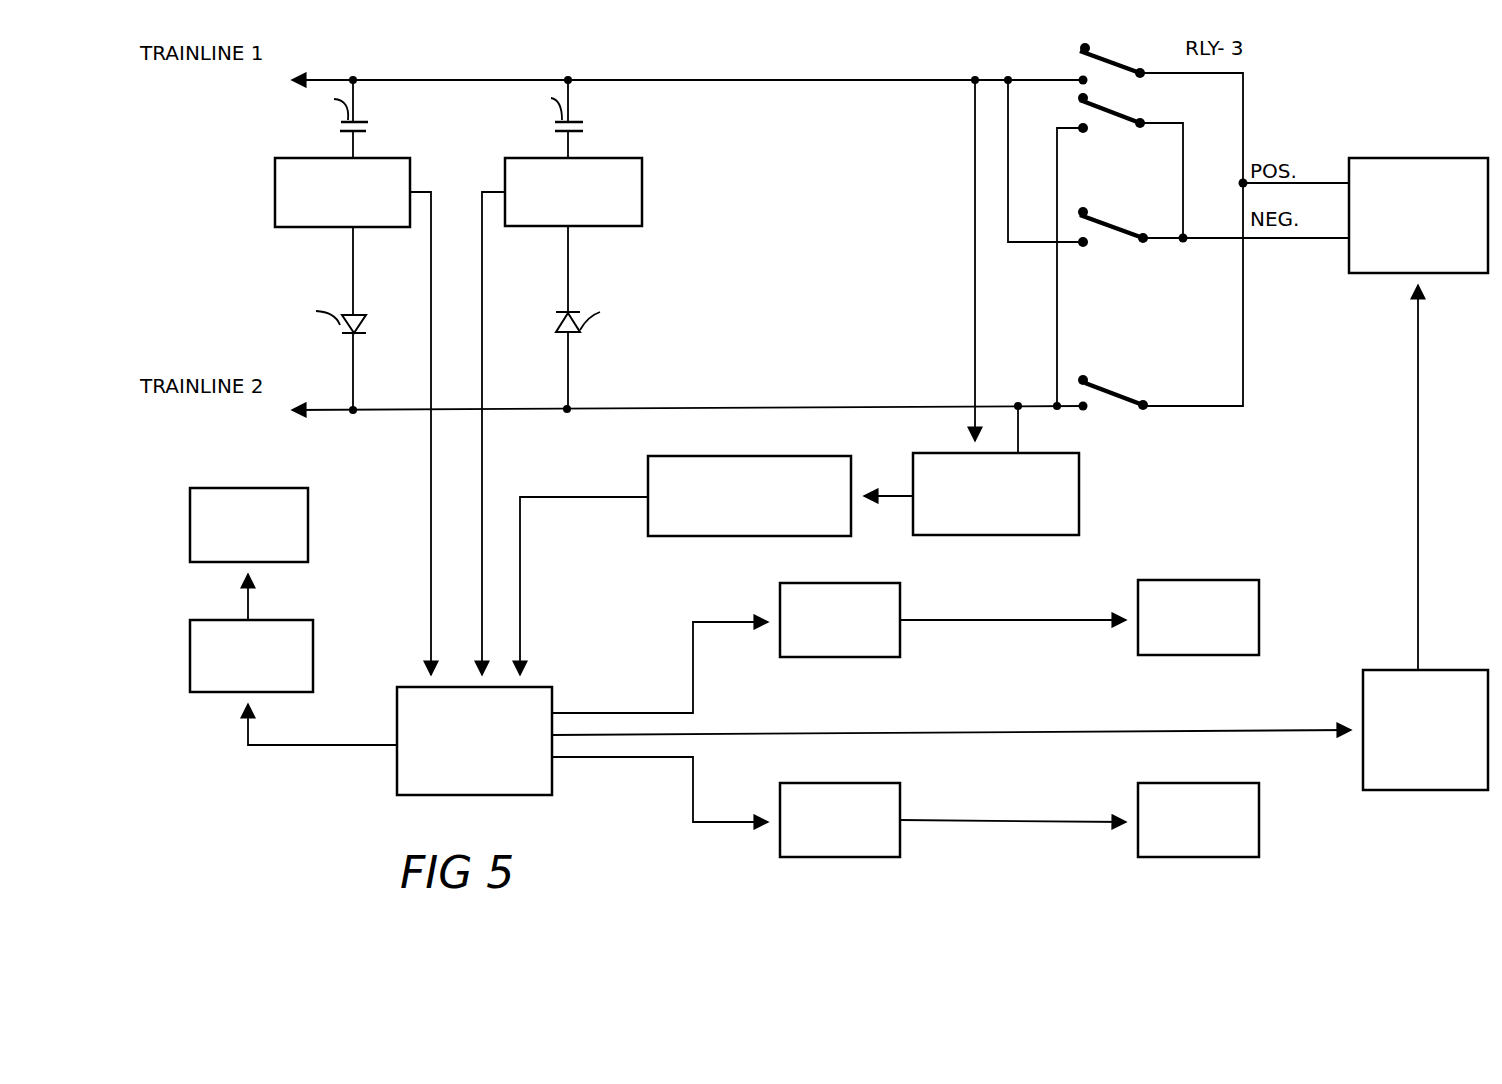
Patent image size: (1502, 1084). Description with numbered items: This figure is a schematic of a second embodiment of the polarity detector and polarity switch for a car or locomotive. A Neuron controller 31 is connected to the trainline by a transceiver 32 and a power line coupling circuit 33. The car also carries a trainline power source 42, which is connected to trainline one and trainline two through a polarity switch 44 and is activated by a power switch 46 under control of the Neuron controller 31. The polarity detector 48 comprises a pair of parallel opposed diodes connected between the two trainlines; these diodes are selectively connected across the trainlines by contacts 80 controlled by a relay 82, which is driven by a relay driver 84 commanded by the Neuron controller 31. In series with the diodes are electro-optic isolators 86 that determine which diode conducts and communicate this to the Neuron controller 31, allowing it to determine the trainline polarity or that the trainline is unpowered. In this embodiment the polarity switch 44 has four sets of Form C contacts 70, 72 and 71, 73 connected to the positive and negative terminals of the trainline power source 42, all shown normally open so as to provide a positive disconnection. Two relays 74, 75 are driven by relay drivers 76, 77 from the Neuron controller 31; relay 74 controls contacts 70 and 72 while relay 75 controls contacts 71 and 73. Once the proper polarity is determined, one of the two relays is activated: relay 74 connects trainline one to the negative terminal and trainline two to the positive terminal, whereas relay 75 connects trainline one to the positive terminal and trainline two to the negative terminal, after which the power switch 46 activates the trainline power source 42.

The Neuron controller 31 is at (407, 708).
The transceiver 32 is at (727, 532).
The coupling circuit 33 is at (1078, 508).
The trainline power source 42 is at (1352, 248).
The polarity switch 44 is at (1183, 447).
The power switch 46 is at (1348, 784).
The polarity detector 48 is at (655, 280).
The Form C contact 70 is at (1113, 228).
The Form C contact 71 is at (1115, 118).
The Form C contact 72 is at (1118, 390).
The Form C contact 73 is at (1112, 65).
The relay 74 is at (1140, 797).
The relay 75 is at (1260, 606).
The relay driver 76 is at (887, 807).
The relay driver 77 is at (893, 603).
The contacts 80 is at (367, 133).
The relay 82 is at (313, 637).
The relay driver 84 is at (305, 512).
The electro-optic isolator 86 is at (410, 170).